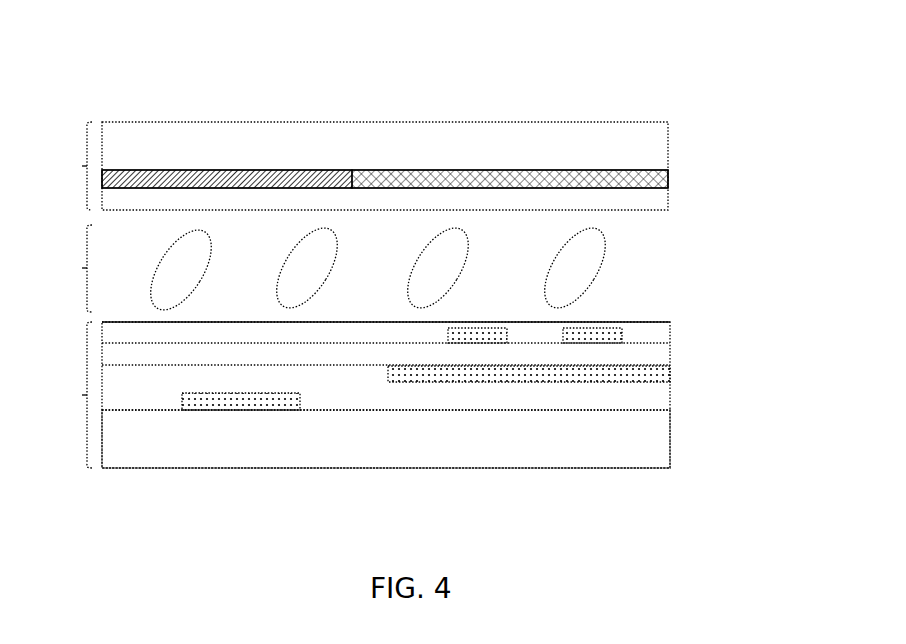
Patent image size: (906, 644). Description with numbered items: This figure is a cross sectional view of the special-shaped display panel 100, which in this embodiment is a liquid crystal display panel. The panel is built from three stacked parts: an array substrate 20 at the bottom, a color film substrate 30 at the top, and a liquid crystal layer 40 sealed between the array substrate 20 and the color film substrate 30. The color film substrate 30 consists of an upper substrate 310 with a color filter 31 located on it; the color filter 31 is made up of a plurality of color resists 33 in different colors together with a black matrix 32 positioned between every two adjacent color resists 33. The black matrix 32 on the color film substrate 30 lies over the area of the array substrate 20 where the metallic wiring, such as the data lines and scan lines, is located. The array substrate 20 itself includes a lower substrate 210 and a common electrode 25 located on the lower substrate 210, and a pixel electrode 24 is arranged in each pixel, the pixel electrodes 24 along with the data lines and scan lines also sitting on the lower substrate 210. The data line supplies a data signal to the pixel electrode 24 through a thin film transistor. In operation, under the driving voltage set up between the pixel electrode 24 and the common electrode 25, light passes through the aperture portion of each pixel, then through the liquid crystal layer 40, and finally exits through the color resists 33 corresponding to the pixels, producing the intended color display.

The special-shaped display panel 100 is at (581, 509).
The array substrate 20 is at (411, 375).
The lower substrate 210 is at (640, 453).
The pixel electrode 24 is at (607, 332).
The common electrode 25 is at (617, 375).
The color film substrate 30 is at (70, 166).
The upper substrate 310 is at (628, 132).
The color filter 31 is at (385, 101).
The black matrix 32 is at (308, 175).
The color resists 33 is at (400, 187).
The liquid crystal layer 40 is at (333, 269).